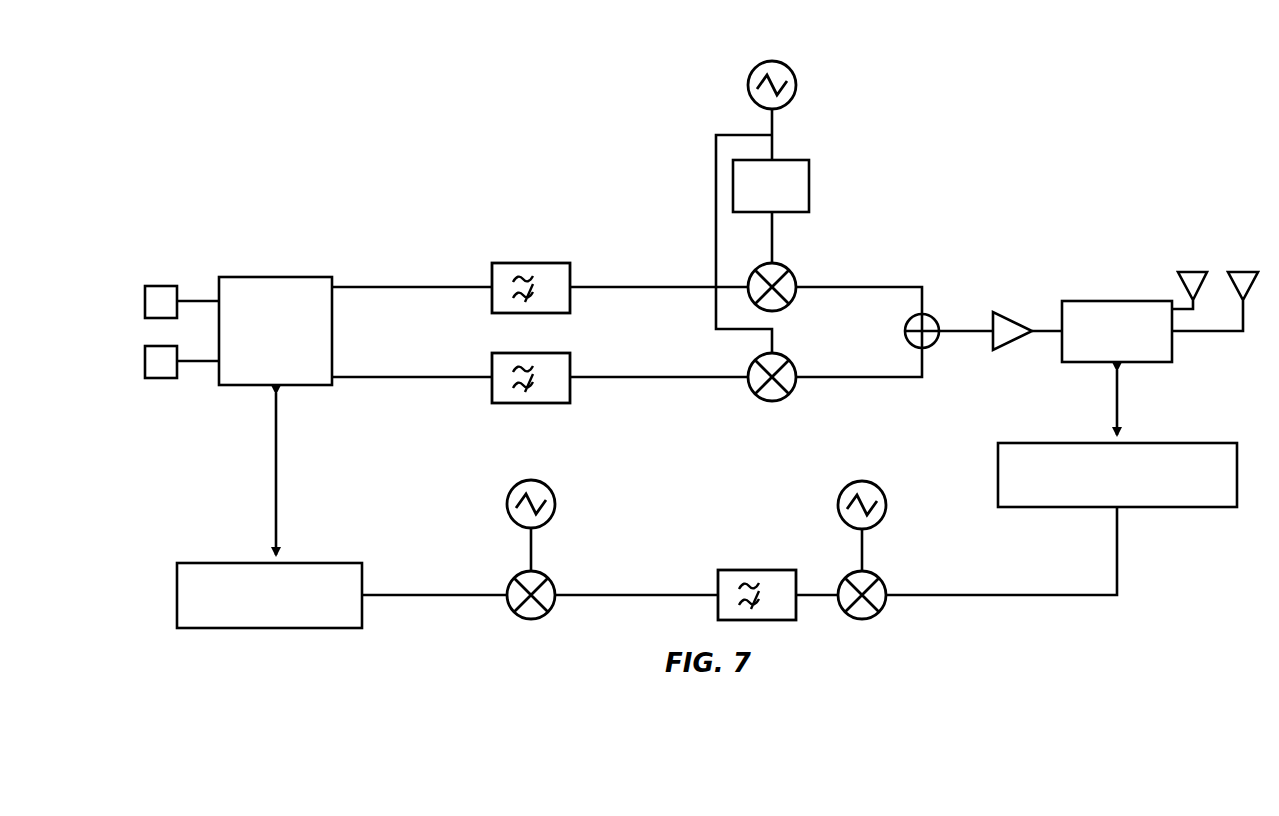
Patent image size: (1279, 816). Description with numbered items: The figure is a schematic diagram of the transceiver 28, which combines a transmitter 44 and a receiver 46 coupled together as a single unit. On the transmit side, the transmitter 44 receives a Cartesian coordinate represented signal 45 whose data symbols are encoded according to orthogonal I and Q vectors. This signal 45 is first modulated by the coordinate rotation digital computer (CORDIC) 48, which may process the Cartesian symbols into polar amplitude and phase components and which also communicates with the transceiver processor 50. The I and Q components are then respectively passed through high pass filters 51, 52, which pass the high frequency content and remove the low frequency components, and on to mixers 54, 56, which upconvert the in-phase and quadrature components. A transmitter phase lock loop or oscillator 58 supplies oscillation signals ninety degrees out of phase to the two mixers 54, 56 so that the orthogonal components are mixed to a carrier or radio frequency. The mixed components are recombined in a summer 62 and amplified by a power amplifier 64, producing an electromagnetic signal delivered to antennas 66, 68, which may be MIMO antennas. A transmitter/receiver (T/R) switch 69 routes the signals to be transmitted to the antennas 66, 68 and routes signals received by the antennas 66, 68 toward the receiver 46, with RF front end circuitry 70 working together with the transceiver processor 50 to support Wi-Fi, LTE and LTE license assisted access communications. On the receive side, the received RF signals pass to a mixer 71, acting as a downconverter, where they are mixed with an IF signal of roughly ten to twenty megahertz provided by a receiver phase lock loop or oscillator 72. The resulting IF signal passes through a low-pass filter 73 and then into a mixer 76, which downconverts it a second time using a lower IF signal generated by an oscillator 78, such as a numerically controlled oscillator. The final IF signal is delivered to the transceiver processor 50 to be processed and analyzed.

The transceiver 28 is at (250, 131).
The transmitter 44 is at (224, 255).
The signal 45 is at (134, 301).
The coordinate rotation digital computer (CORDIC) 48 is at (276, 277).
The transceiver processor 50 is at (318, 563).
The high pass filter 51 is at (531, 263).
The high pass filter 52 is at (530, 403).
The mixer 54 is at (794, 274).
The mixer 56 is at (773, 401).
The transmitter phase lock loop or oscillator 58 is at (772, 61).
The summer 62 is at (933, 346).
The power amplifier 64 is at (1006, 316).
The antenna 66 is at (1243, 272).
The antenna 68 is at (1193, 272).
The transmitter/receiver (T/R) switch 69 is at (1117, 301).
The RF front end circuitry 70 is at (1039, 443).
The mixer 71 is at (863, 619).
The receiver phase lock loop or oscillator 72 is at (862, 481).
The low-pass filter 73 is at (755, 570).
The mixer 76 is at (532, 619).
The oscillator 78 is at (507, 504).
The receiver 46 is at (1031, 636).